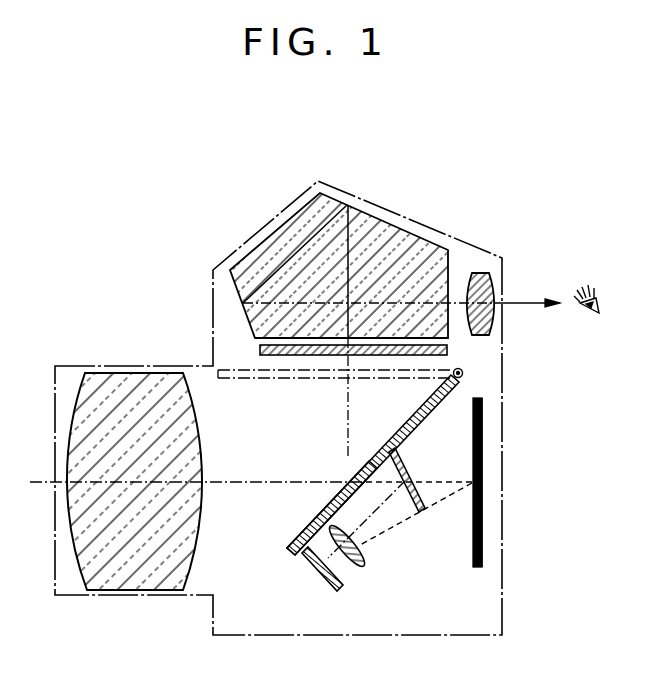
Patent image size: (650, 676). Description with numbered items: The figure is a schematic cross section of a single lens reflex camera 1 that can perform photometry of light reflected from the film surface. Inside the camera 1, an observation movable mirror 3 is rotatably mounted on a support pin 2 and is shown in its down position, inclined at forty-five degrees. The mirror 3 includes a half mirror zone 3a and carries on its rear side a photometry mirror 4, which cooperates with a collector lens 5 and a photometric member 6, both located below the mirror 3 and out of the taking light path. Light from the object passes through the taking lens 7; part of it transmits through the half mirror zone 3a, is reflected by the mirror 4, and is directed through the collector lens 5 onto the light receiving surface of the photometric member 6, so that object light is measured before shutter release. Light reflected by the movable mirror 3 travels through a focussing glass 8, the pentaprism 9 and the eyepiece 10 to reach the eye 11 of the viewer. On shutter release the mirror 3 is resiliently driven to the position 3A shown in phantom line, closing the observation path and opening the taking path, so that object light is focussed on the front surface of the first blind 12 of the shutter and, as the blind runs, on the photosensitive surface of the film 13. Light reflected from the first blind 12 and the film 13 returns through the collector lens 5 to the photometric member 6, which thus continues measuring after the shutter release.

The camera 1 is at (410, 220).
The support pin 2 is at (465, 373).
The observation movable mirror 3 is at (408, 424).
The half mirror zone 3a is at (362, 471).
The position of movable mirror (phantom line) 3A is at (260, 379).
The photometry mirror 4 is at (406, 469).
The collector lens 5 is at (364, 563).
The photometric member 6 is at (340, 588).
The taking lens 7 is at (192, 457).
The focussing glass 8 is at (260, 349).
The pentaprism 9 is at (283, 232).
The eyepiece 10 is at (487, 285).
The eye 11 is at (593, 313).
The first blind of shutter 12 is at (474, 537).
The film 13 is at (482, 569).